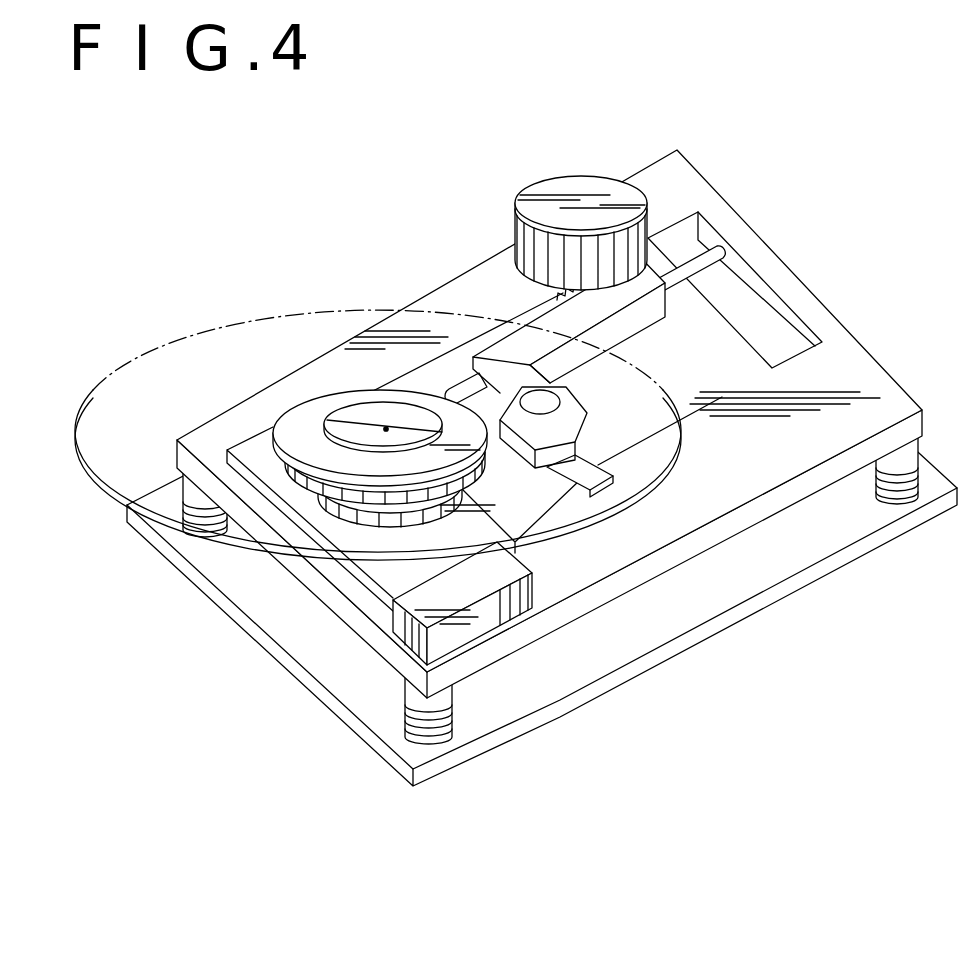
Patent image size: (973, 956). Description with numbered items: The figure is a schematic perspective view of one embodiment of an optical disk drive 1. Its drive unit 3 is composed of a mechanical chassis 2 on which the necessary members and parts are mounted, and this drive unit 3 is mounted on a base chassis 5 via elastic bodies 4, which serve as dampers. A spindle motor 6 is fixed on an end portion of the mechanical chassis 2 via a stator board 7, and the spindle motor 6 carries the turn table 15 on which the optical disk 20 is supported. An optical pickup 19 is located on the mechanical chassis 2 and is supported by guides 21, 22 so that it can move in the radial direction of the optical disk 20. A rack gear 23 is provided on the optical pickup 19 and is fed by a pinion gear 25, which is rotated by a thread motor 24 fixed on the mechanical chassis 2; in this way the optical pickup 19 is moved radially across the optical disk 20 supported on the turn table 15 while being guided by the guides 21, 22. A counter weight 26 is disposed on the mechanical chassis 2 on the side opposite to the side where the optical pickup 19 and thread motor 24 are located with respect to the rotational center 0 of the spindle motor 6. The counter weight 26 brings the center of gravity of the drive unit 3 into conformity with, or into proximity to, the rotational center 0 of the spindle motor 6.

The optical disk drive 1 is at (369, 206).
The mechanical chassis 2 is at (785, 280).
The drive unit 3 is at (680, 557).
The elastic bodies (dampers) 4 is at (127, 517).
The base chassis 5 is at (797, 557).
The spindle motor 6 is at (345, 507).
The stator board 7 is at (247, 453).
The turn table 15 is at (308, 410).
The rotational center of the spindle motor 0 is at (386, 429).
The optical pickup 19 is at (590, 413).
The optical disk 20 is at (205, 300).
The guide 21 is at (697, 223).
The guide 22 is at (777, 378).
The rack gear 23 is at (567, 287).
The thread motor 24 is at (588, 183).
The pinion gear 25 is at (560, 260).
The counter weight 26 is at (520, 617).